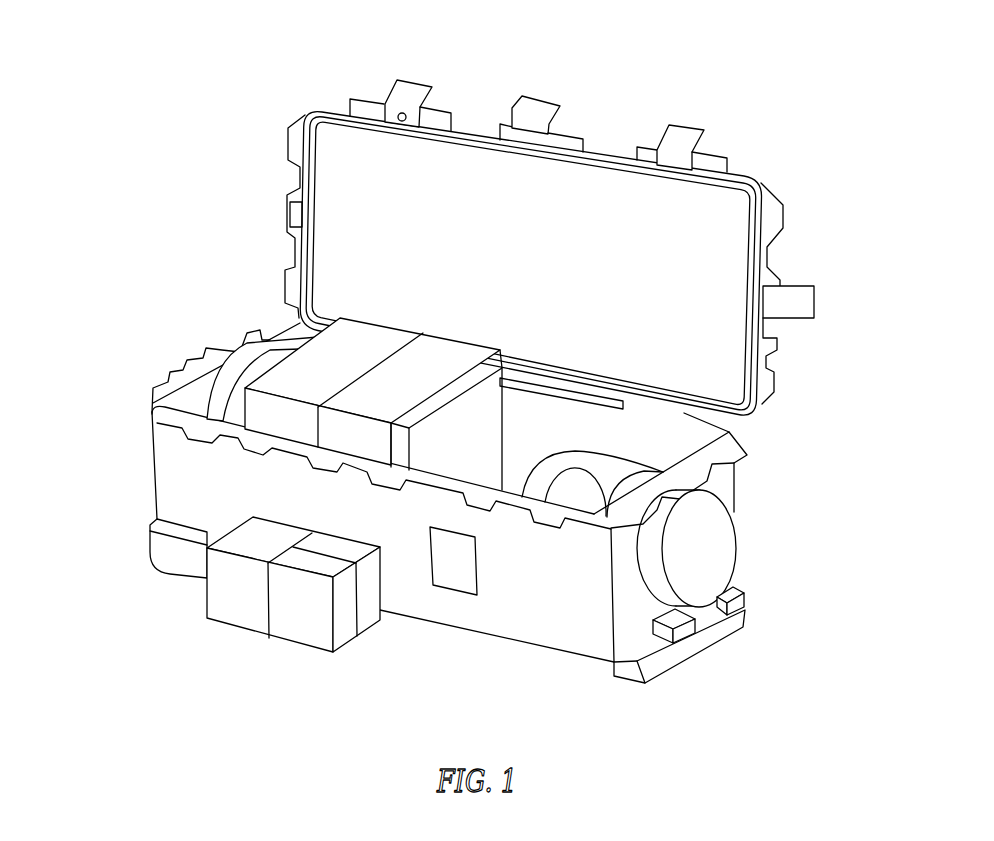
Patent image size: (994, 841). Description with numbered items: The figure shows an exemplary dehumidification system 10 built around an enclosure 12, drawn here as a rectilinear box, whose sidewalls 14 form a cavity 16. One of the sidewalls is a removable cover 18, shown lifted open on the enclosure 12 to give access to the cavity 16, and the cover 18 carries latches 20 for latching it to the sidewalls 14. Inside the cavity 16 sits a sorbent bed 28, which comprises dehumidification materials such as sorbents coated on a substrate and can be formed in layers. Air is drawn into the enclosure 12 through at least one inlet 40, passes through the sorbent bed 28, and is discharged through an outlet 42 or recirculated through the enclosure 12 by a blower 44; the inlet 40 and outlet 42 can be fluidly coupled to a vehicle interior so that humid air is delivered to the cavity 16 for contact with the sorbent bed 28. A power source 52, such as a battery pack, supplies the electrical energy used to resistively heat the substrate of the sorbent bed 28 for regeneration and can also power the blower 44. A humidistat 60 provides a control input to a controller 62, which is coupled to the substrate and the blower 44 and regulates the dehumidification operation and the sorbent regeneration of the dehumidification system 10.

The dehumidification system 10 is at (198, 80).
The enclosure 12 is at (128, 462).
The sidewalls 14 is at (577, 603).
The cavity 16 is at (552, 429).
The removable cover 18 is at (758, 178).
The latches 20 is at (546, 97).
The sorbent bed 28 is at (339, 377).
The inlet 40 is at (228, 390).
The outlet 42 is at (727, 527).
The blower 44 is at (606, 492).
The power source 52 is at (316, 621).
The humidistat 60 is at (632, 625).
The controller 62 is at (470, 575).